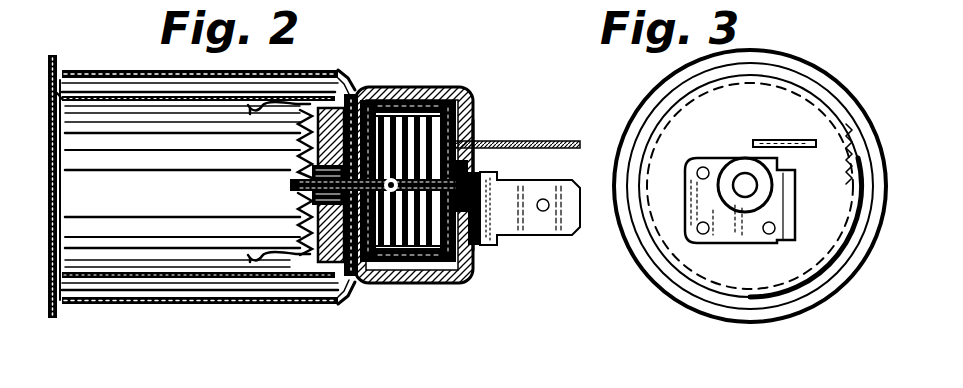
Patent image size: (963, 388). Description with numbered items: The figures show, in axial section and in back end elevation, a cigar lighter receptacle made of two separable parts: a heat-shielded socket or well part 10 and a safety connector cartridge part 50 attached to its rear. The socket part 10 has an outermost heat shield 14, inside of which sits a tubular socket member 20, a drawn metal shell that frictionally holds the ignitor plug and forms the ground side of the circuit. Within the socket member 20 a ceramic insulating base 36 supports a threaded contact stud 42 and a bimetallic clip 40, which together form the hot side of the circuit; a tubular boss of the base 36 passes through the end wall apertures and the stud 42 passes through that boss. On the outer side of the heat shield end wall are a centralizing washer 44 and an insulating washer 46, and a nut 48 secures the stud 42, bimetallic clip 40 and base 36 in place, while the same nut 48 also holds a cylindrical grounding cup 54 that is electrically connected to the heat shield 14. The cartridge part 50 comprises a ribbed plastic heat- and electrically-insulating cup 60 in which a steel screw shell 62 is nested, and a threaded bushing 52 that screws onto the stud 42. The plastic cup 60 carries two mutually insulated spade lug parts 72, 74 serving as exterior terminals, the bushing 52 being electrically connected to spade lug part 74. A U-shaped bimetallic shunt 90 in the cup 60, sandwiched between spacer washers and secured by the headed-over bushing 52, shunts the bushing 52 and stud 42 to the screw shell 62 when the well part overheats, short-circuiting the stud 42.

In FIG. 2, the socket part 10 is at (177, 312).
In FIG. 2, the heat shield 14 is at (118, 300).
In FIG. 2, the tubular socket member 20 is at (202, 246).
In FIG. 2, the ceramic insulating base 36 is at (340, 298).
In FIG. 2, the bimetallic clip 40 is at (260, 250).
In FIG. 2, the threaded contact stud 42 is at (291, 193).
In FIG. 2, the centralizing washer 44 is at (375, 100).
In FIG. 2, the insulating washer 46 is at (385, 280).
In FIG. 2, the nut 48 is at (424, 103).
In FIG. 2, the safety connector cartridge part 50 is at (437, 300).
In FIG. 3, the safety connector cartridge part 50 is at (746, 262).
In FIG. 2, the threaded bushing 52 is at (481, 202).
In FIG. 2, the grounding cup 54 is at (397, 96).
In FIG. 2, the plastic insulating cup 60 is at (470, 273).
In FIG. 3, the plastic insulating cup 60 is at (812, 284).
In FIG. 2, the steel screw shell 62 is at (413, 273).
In FIG. 2, the spade lug part 72 is at (517, 140).
In FIG. 3, the spade lug part 72 is at (788, 140).
In FIG. 2, the spade lug part 74 is at (547, 220).
In FIG. 3, the spade lug part 74 is at (790, 214).
In FIG. 2, the bimetallic shunt 90 is at (452, 274).